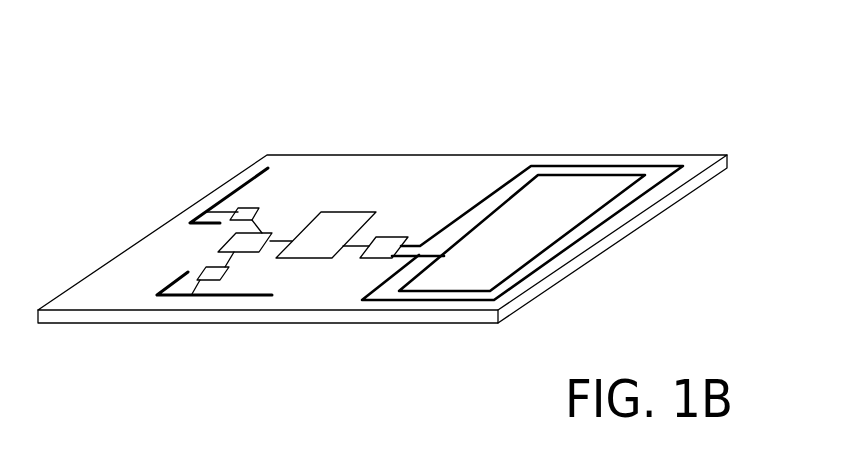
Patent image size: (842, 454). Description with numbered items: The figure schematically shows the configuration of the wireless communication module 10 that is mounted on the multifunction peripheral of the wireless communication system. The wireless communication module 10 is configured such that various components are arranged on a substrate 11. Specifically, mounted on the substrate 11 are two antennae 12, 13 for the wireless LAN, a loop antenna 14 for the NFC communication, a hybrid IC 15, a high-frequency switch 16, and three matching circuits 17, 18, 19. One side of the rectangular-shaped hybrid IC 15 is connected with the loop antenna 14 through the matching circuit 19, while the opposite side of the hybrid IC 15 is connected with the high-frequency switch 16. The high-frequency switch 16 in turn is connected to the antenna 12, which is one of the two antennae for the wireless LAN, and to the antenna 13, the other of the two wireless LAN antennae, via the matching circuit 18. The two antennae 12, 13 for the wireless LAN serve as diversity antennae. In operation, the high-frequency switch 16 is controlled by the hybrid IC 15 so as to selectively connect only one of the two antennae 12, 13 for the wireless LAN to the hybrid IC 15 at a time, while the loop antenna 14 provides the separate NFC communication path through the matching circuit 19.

The wireless communication module 10 is at (592, 102).
The substrate 11 is at (556, 272).
The antenna 12 is at (236, 190).
The antenna 13 is at (228, 297).
The loop antenna 14 is at (604, 222).
The hybrid IC 15 is at (343, 212).
The high-frequency switch 16 is at (266, 233).
The matching circuit 17 is at (259, 210).
The matching circuit 18 is at (207, 268).
The matching circuit 19 is at (393, 237).